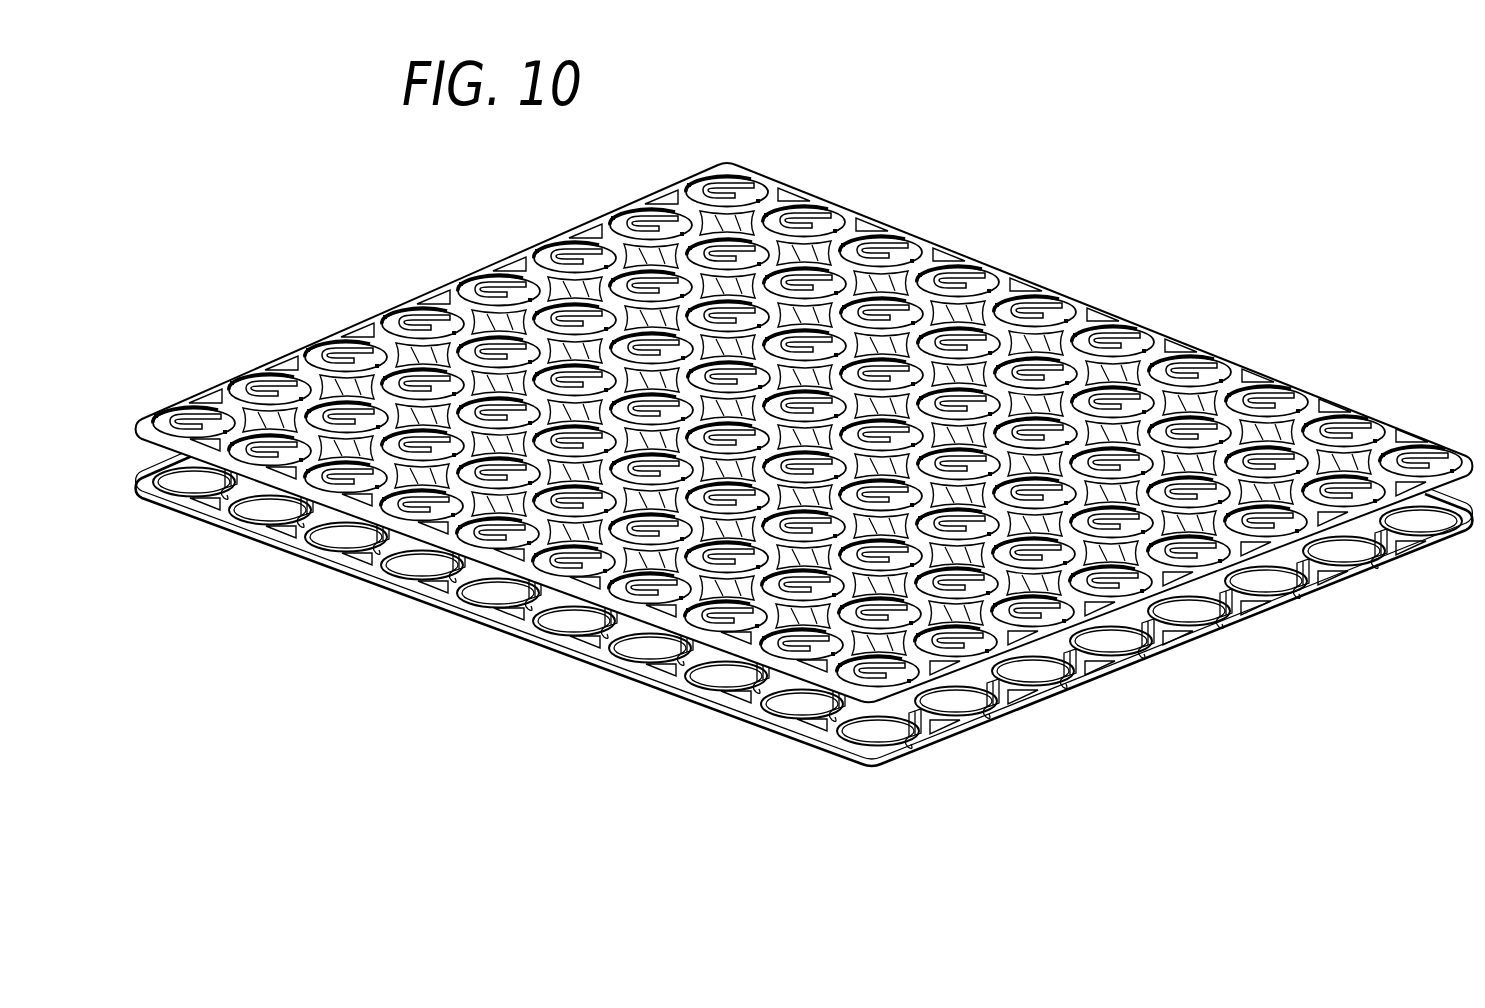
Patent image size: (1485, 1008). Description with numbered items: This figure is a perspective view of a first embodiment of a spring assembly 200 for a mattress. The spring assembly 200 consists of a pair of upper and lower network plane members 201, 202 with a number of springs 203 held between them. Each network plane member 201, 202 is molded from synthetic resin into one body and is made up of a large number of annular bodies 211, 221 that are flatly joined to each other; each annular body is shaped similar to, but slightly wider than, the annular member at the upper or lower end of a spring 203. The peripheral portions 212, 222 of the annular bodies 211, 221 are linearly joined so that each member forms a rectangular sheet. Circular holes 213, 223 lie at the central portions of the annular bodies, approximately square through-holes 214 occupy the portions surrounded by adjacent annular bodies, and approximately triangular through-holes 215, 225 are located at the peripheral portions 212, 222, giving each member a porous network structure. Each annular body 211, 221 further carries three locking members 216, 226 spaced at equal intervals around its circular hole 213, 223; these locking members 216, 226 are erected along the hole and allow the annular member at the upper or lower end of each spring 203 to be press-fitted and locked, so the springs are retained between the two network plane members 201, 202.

The spring assembly 200 is at (915, 222).
The upper network plane member 201 is at (975, 258).
The lower network plane member 202 is at (938, 755).
The springs 203 is at (977, 732).
The annular bodies 211 is at (1023, 295).
The peripheral portions 212 is at (1095, 302).
The circular holes 213 is at (1113, 329).
The square through-holes 214 is at (1172, 409).
The triangular through-holes 215 is at (1252, 369).
The locking members 216 is at (1368, 427).
The annular bodies 221 is at (1017, 693).
The peripheral portions 222 is at (1120, 677).
The circular holes 223 is at (1180, 617).
The triangular through-holes 225 is at (1245, 610).
The locking members 226 is at (1273, 603).